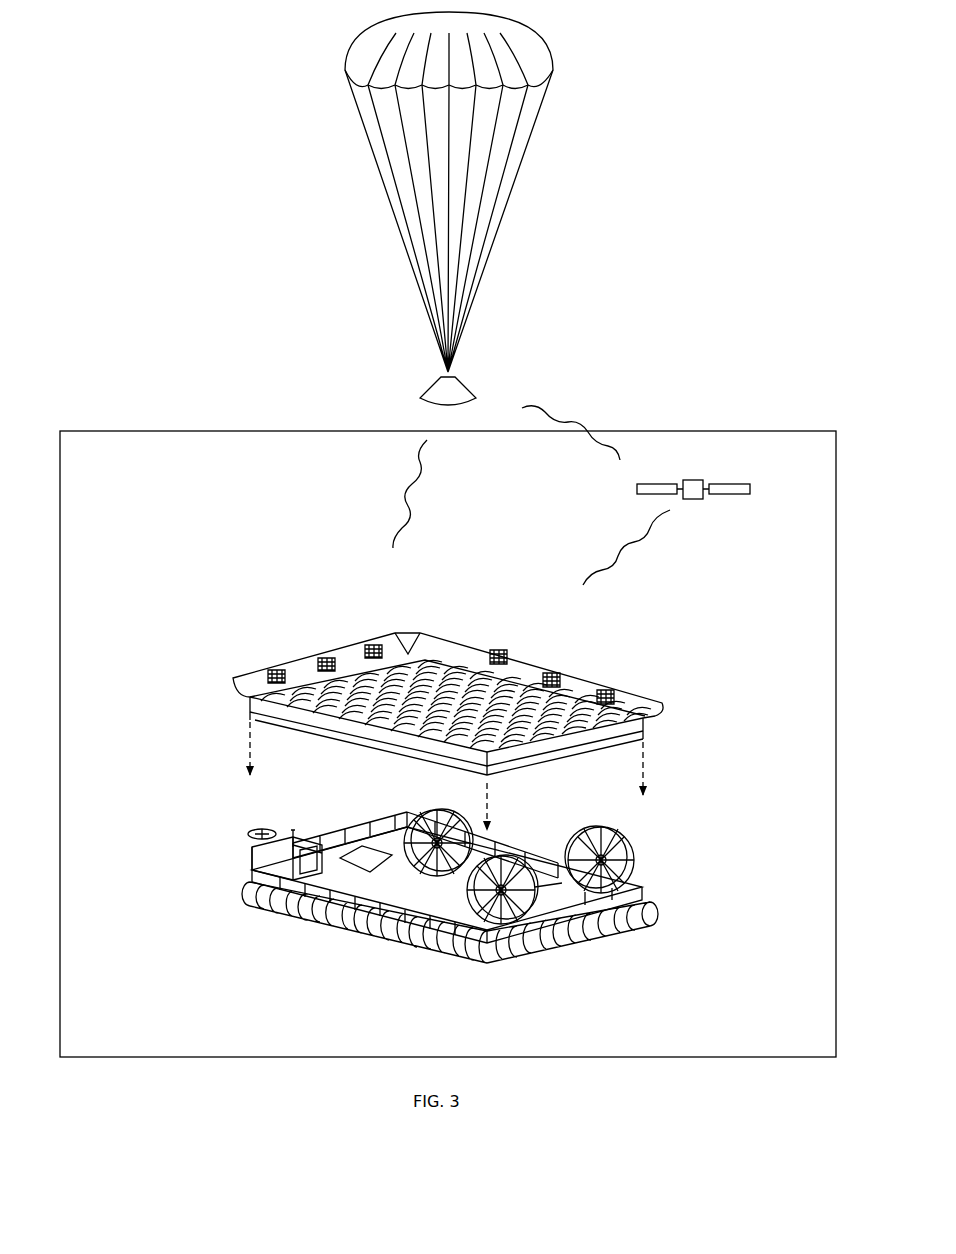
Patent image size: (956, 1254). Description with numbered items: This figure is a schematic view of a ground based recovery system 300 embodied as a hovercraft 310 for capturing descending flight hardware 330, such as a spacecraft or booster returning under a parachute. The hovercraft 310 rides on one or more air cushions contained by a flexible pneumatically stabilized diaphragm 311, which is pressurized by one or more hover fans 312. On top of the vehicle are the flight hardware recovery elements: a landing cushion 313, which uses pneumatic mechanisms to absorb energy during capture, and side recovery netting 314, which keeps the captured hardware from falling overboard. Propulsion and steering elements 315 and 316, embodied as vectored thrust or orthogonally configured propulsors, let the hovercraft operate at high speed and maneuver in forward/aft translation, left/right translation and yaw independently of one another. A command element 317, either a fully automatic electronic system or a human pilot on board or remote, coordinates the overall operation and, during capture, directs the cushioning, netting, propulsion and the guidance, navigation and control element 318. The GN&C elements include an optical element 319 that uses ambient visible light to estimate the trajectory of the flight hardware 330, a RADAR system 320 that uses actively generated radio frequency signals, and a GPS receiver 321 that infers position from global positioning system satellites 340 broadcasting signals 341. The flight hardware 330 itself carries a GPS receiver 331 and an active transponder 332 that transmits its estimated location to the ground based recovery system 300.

The ground based recovery system 300 is at (139, 426).
The hovercraft 310 is at (632, 820).
The flexible pneumatically stabilized diaphragm 311 is at (604, 945).
The hover fan 312 is at (337, 872).
The landing cushion 313 is at (370, 692).
The recovery netting 314 is at (622, 680).
The propulsion and steering element 315 is at (645, 845).
The propulsion and steering element 316 is at (418, 812).
The command element 317 is at (248, 862).
The guidance, navigation and control element 318 is at (245, 845).
The optical GN&C element 319 is at (456, 700).
The RADAR system 320 is at (246, 833).
The global positioning system receiver 321 is at (290, 831).
The descending flight hardware 330 is at (420, 388).
The global positioning system receiver 331 is at (470, 392).
The active transponder 332 is at (395, 502).
The global positioning system satellite 340 is at (706, 506).
The signal 341 is at (653, 541).